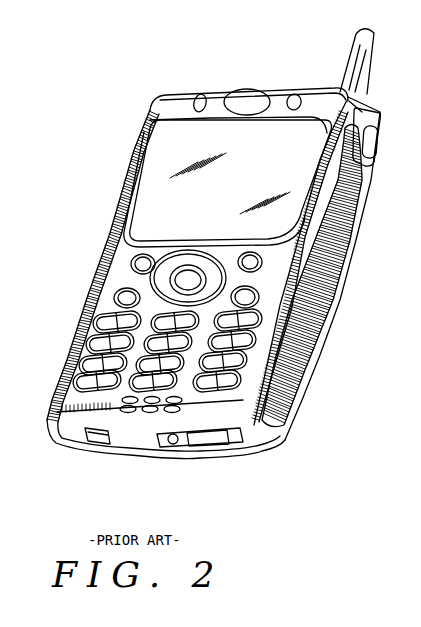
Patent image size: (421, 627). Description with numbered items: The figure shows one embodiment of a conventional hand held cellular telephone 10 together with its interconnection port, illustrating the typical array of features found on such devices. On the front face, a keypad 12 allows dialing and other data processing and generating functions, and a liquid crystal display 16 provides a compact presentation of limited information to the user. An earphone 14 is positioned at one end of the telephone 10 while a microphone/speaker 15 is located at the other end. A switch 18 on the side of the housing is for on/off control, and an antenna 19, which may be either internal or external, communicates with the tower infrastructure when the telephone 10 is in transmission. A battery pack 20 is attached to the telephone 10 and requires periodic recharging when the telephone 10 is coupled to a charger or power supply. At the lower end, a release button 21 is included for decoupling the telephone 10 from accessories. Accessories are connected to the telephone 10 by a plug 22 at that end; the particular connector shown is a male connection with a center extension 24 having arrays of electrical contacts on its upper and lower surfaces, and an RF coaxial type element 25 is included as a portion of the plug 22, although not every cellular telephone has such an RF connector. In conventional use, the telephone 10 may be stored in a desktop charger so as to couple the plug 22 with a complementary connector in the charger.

The hand held cellular telephone 10 is at (227, 271).
The keypad 12 is at (103, 307).
The earphone 14 is at (240, 92).
The microphone/speaker 15 is at (117, 400).
The liquid crystal display 16 is at (160, 148).
The switch 18 is at (373, 143).
The antenna 19 is at (368, 59).
The battery pack 20 is at (300, 383).
The release button 21 is at (82, 448).
The plug 22 is at (197, 457).
The center extension 24 is at (220, 457).
The RF coaxial type element 25 is at (160, 453).